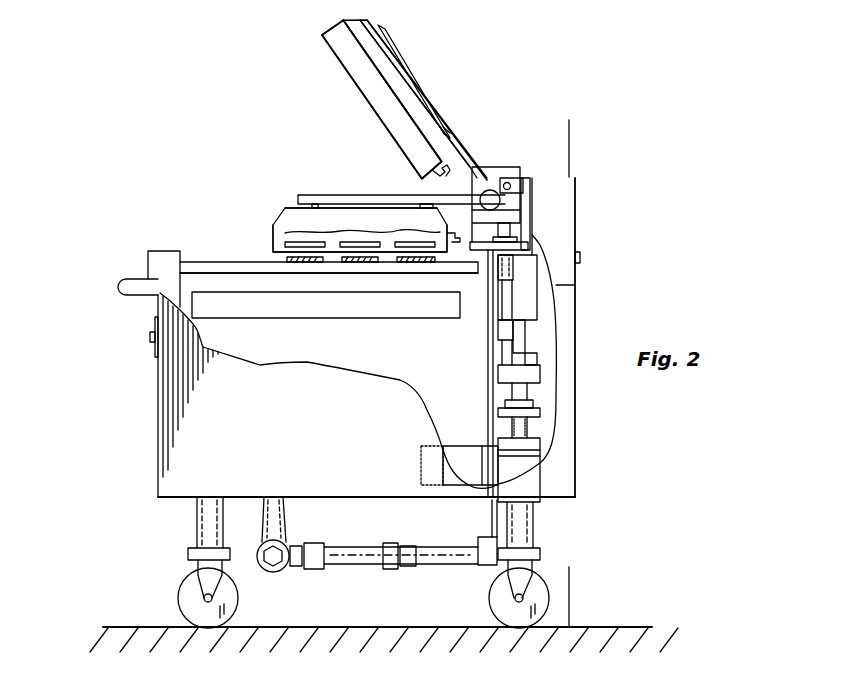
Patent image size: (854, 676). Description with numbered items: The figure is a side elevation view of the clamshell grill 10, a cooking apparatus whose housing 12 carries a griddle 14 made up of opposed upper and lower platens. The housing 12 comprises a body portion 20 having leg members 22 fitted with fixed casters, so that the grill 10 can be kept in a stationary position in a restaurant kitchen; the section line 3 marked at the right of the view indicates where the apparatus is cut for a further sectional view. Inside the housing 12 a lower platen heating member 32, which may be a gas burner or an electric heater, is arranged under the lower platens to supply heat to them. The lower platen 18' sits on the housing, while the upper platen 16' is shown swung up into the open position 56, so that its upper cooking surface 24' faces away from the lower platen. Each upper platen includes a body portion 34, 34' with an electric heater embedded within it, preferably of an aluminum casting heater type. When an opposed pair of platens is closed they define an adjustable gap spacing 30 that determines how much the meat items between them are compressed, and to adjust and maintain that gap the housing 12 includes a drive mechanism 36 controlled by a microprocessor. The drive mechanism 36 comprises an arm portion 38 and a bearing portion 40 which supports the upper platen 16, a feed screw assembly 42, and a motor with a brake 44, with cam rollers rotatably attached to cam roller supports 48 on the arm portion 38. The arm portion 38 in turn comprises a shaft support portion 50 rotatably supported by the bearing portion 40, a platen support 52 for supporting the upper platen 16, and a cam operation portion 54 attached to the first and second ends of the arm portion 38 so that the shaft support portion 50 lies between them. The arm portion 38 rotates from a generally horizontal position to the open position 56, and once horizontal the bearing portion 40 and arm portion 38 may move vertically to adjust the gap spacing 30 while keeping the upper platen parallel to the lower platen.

The section line 3- 3 is at (584, 164).
The clamshell grill 10 is at (185, 144).
The housing 12 is at (148, 387).
The griddle 14 is at (198, 244).
The upper platen 16 is at (337, 196).
The upper platen 16' is at (369, 100).
The lower platen 18' is at (276, 193).
The body portion 20 is at (198, 482).
The leg members 22 is at (205, 530).
The upper cooking surface 24' is at (358, 90).
The gap spacing 30 is at (217, 262).
The lower platen heating member 32 is at (335, 316).
The body portion 34 is at (366, 194).
The body portion 34' is at (436, 99).
The drive mechanism 36 is at (540, 341).
The arm portion 38 is at (478, 126).
The bearing portion 40 is at (526, 150).
The feed screw assembly 42 is at (523, 375).
The motor with a brake 44 is at (520, 467).
The cam roller supports 48 is at (522, 182).
The shaft support portion 50 is at (492, 206).
The platen support 52 is at (400, 50).
The cam operation portion 54 is at (505, 198).
The open position 56 is at (220, 70).